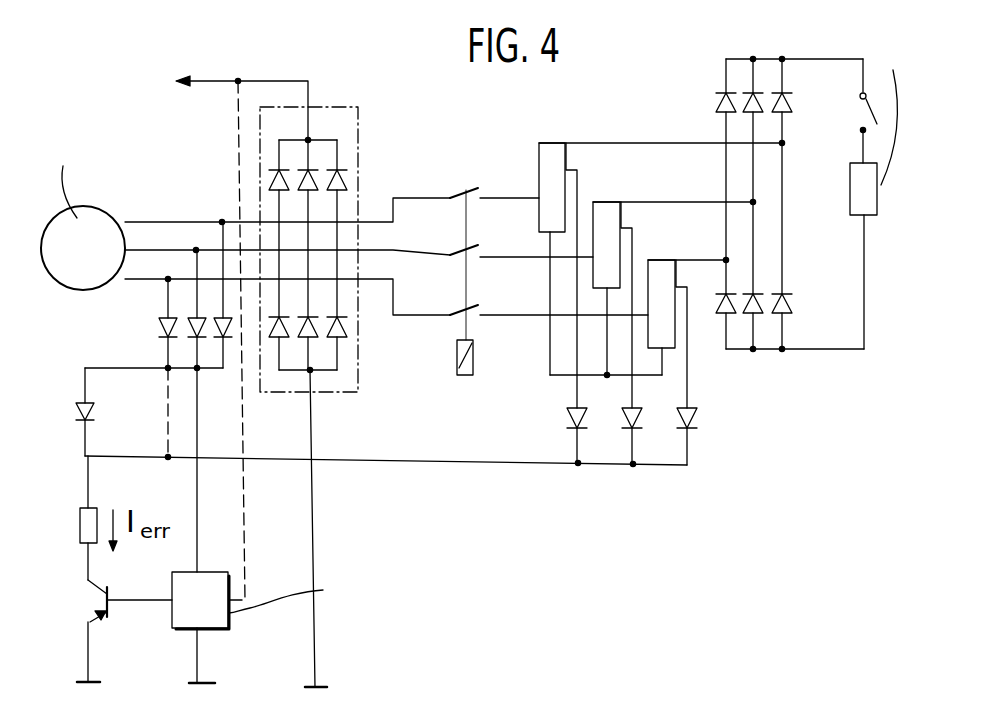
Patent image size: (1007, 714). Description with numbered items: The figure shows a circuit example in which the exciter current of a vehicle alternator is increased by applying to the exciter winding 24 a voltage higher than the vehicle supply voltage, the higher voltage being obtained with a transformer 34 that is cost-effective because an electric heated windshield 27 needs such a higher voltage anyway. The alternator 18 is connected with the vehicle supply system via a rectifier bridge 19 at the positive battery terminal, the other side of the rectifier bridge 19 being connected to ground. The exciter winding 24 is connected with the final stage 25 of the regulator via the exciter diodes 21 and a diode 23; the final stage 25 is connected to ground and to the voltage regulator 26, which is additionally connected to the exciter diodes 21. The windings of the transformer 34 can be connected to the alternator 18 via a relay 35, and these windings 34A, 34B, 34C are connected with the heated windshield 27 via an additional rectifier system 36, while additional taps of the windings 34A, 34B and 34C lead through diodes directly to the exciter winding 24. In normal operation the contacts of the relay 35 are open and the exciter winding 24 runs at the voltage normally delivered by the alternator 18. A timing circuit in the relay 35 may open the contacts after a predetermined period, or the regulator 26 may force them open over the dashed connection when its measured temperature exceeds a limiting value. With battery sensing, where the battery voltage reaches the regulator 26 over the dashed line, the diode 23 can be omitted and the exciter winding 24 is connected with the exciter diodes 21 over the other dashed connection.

The alternator 18 is at (97, 210).
The rectifier bridge 19 is at (367, 122).
The exciter diodes 21 is at (150, 329).
The diode 23 is at (97, 407).
The exciter winding 24 is at (79, 512).
The final stage of the regulator 25 is at (103, 619).
The voltage regulator 26 is at (222, 614).
The heated windshield 27 is at (865, 183).
The transformer 34 is at (518, 158).
The transformer winding 34A is at (557, 113).
The transformer winding 34B is at (604, 173).
The transformer winding 34C is at (652, 238).
The relay 35 is at (466, 376).
The additional rectifier system 36 is at (793, 126).